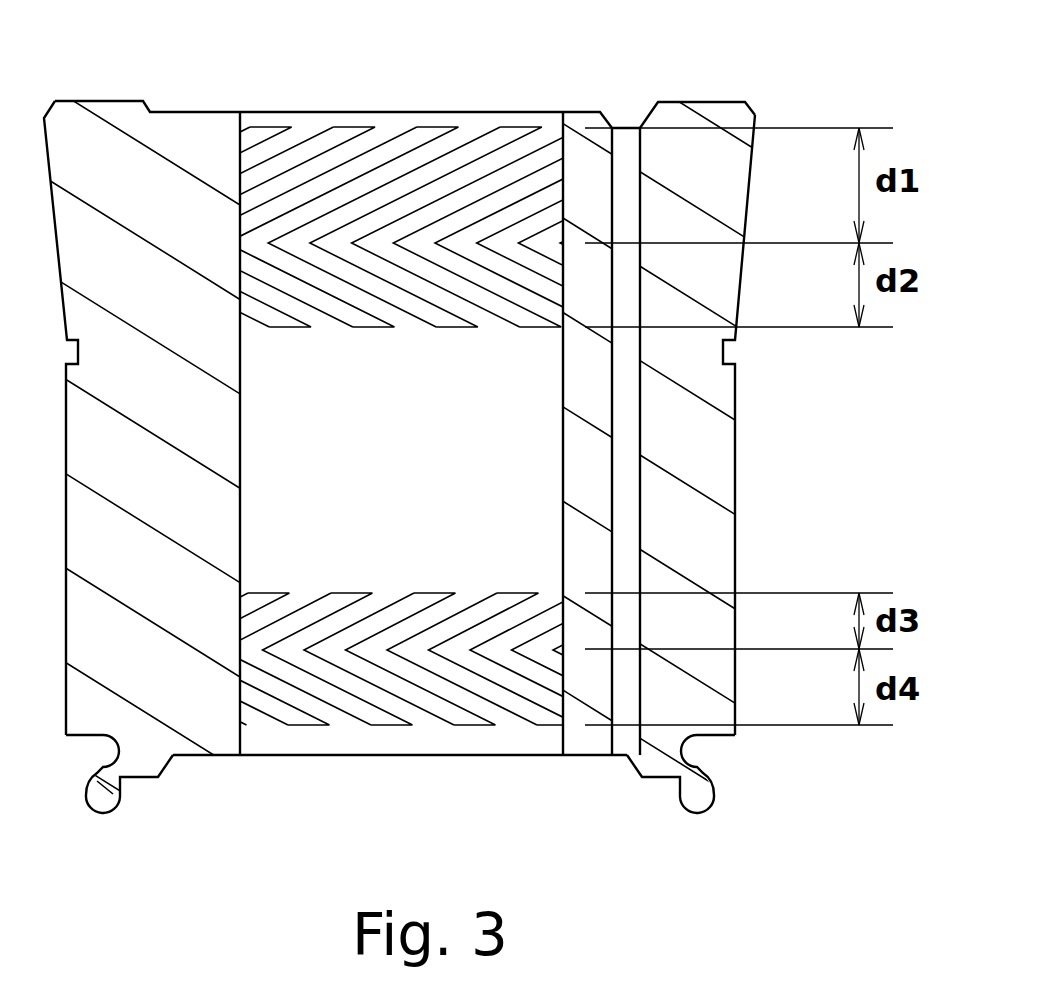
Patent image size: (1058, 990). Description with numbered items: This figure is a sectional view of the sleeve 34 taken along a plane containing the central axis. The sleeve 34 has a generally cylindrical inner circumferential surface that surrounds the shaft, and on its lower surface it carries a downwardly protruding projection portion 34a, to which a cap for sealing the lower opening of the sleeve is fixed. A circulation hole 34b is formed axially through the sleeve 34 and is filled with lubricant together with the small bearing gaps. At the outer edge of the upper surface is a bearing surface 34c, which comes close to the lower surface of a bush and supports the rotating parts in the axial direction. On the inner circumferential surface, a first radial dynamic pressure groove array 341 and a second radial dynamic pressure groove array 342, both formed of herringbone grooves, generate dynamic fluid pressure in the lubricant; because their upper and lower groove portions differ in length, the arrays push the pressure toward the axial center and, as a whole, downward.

The sleeve 34 is at (150, 47).
The projection portion 34a is at (108, 803).
The circulation hole 34b is at (622, 502).
The bearing surface 34c is at (711, 82).
The first radial dynamic pressure groove array 341 is at (387, 353).
The second radial dynamic pressure groove array 342 is at (387, 568).